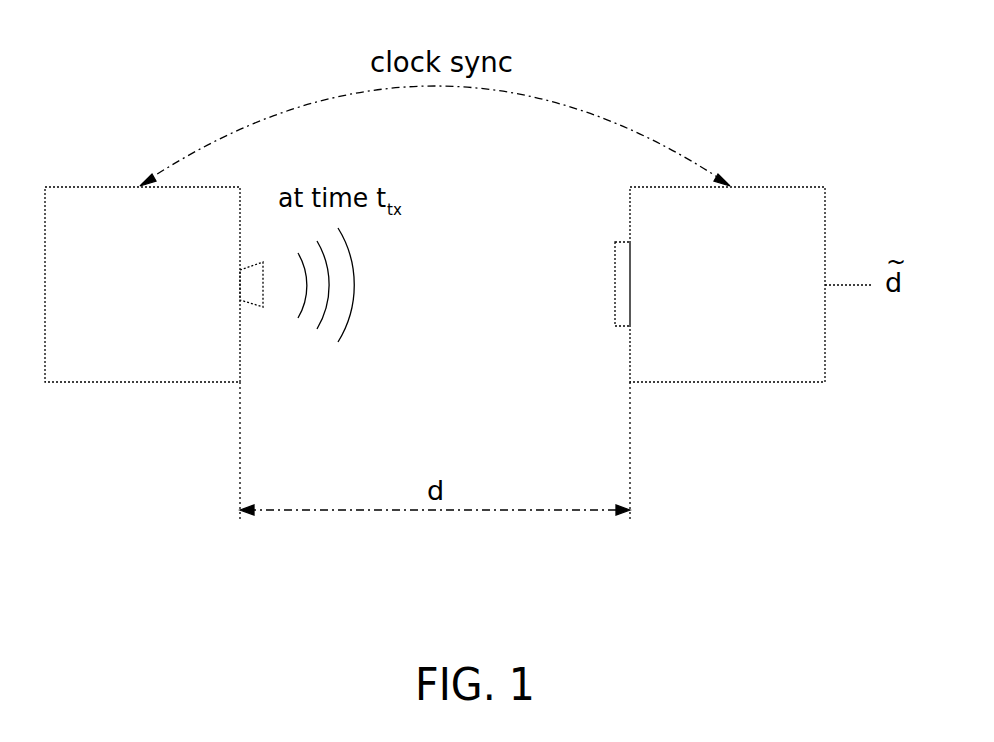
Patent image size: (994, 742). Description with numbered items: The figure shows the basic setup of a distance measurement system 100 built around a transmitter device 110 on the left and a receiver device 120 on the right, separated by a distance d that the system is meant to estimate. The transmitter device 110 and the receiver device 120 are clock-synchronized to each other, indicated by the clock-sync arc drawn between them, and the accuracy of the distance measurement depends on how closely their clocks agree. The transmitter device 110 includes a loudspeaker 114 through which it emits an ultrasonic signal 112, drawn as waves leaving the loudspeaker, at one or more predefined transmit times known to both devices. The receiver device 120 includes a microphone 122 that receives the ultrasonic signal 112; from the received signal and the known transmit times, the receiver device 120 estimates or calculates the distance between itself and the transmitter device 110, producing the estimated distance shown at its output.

The distance measurement system 100 is at (672, 92).
The transmitter device 110 is at (132, 382).
The ultrasonic signal 112 is at (312, 362).
The loudspeaker 114 is at (252, 268).
The receiver device 120 is at (710, 382).
The microphone 122 is at (615, 300).